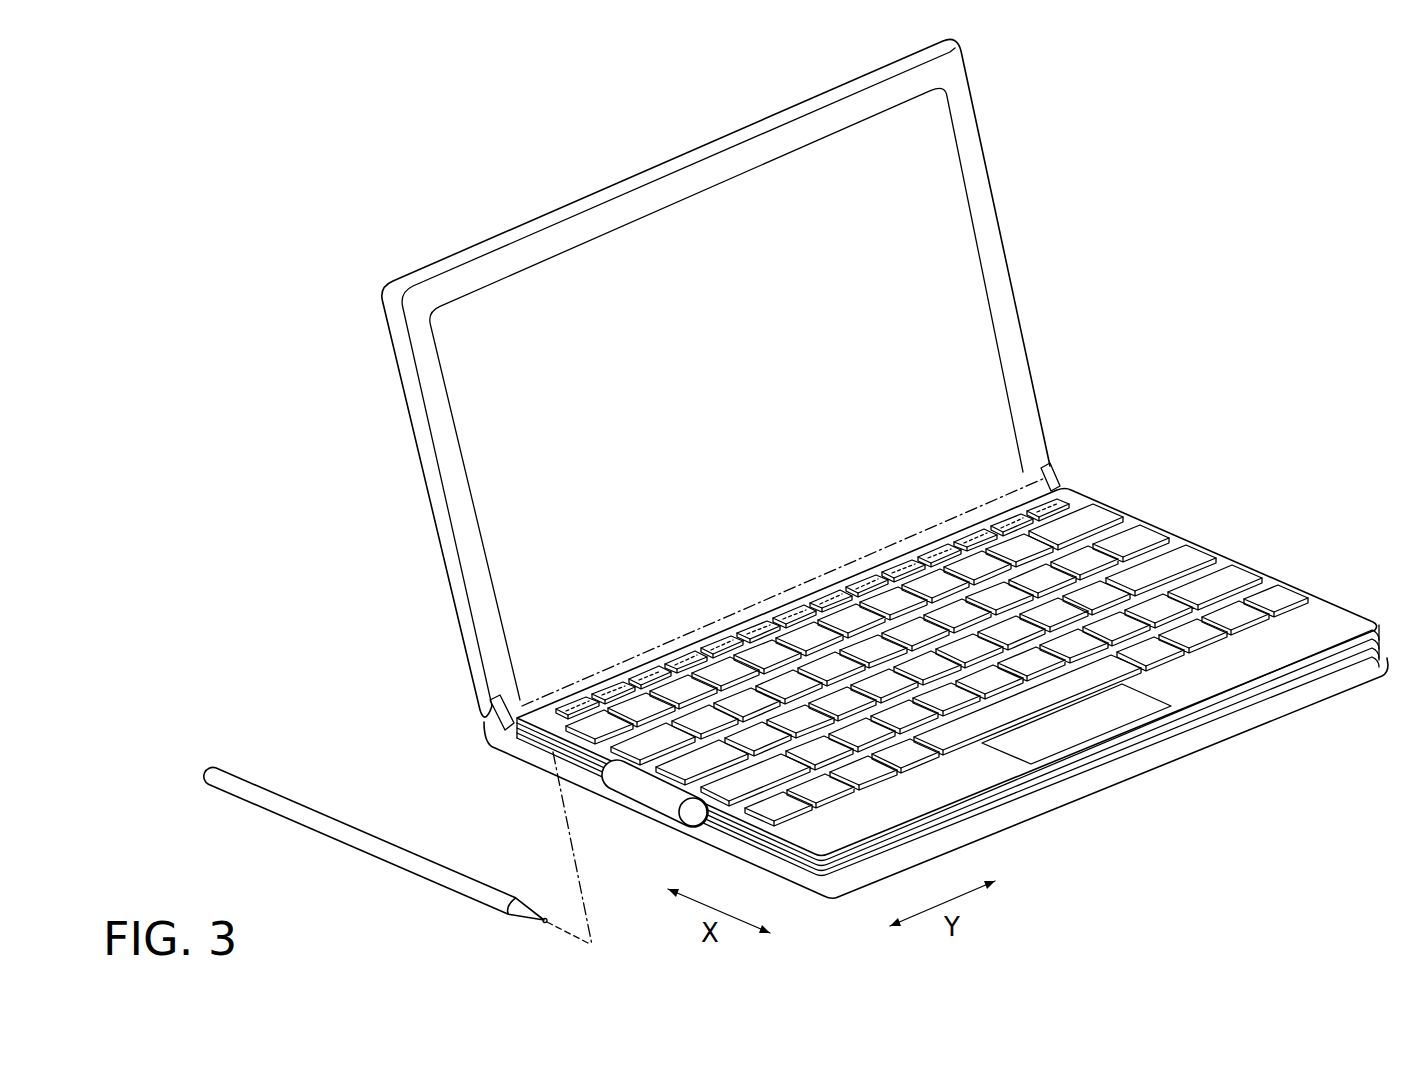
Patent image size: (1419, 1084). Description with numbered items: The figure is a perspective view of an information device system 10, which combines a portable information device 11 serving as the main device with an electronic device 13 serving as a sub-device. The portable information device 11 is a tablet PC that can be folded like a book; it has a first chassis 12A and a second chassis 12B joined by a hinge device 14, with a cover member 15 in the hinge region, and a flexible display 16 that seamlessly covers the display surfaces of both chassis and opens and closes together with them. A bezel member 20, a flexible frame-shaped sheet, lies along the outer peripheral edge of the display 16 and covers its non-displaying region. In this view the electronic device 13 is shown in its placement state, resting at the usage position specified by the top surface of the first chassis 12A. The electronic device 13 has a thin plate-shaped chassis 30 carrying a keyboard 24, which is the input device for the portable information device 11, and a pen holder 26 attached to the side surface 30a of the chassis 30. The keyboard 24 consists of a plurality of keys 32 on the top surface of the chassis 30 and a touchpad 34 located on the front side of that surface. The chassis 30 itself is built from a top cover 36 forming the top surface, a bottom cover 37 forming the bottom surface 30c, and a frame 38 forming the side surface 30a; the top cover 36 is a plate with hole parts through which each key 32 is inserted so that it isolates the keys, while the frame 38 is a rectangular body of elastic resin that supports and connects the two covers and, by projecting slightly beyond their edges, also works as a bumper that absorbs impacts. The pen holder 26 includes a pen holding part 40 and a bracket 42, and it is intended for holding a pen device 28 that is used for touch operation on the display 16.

The information device system 10 is at (1255, 105).
The portable information device 11 is at (1016, 267).
The first chassis 12A is at (1191, 743).
The second chassis 12B is at (700, 170).
The electronic device 13 is at (1264, 562).
The hinge device 14 is at (486, 758).
The cover member 15 is at (492, 726).
The display 16 is at (943, 200).
The bezel member 20 is at (440, 405).
The keyboard 24 is at (985, 774).
The pen holder 26 is at (638, 830).
The pen holding part 40 is at (650, 795).
The pen device 28 is at (320, 840).
The chassis 30 is at (960, 704).
The top cover 36 is at (1297, 616).
The bottom surface 30c is at (948, 792).
The bottom cover 37 is at (1067, 783).
The side surface 30a is at (948, 807).
The frame 38 is at (802, 866).
The keys 32 is at (1153, 572).
The touchpad 34 is at (1098, 722).
The bracket 42 is at (713, 824).